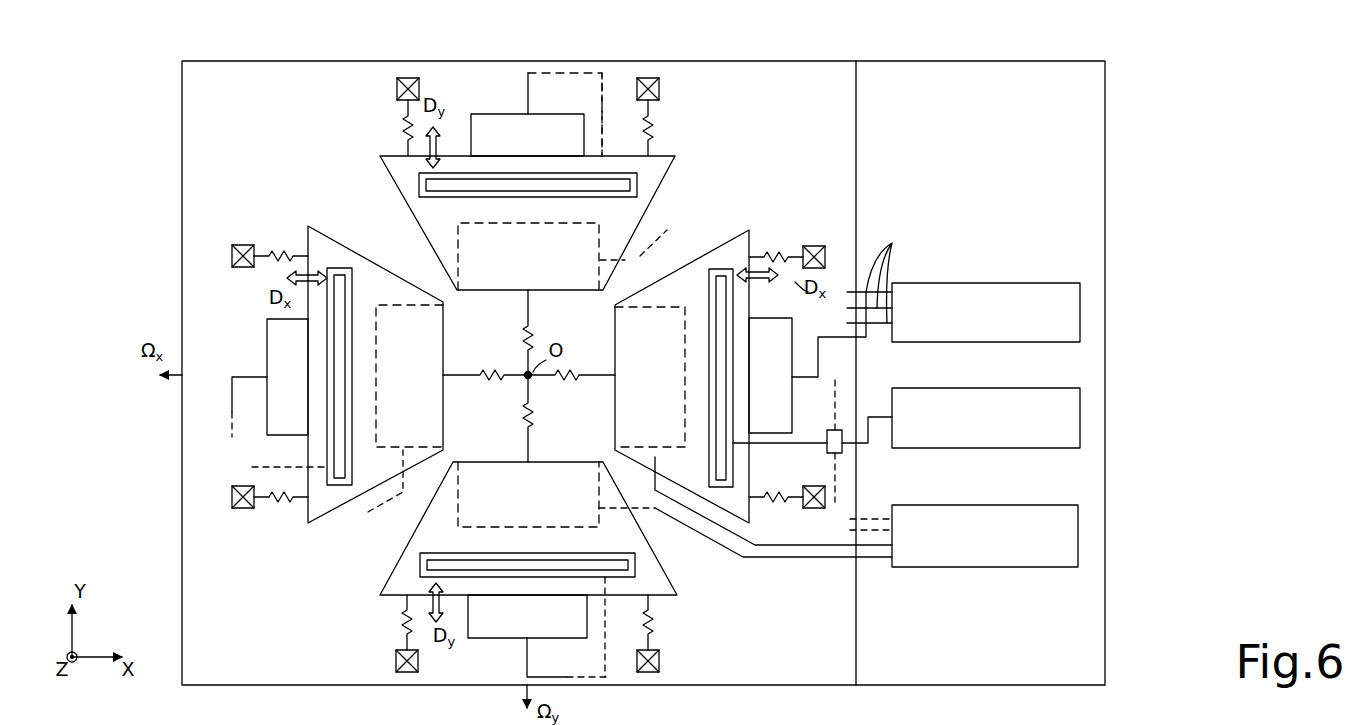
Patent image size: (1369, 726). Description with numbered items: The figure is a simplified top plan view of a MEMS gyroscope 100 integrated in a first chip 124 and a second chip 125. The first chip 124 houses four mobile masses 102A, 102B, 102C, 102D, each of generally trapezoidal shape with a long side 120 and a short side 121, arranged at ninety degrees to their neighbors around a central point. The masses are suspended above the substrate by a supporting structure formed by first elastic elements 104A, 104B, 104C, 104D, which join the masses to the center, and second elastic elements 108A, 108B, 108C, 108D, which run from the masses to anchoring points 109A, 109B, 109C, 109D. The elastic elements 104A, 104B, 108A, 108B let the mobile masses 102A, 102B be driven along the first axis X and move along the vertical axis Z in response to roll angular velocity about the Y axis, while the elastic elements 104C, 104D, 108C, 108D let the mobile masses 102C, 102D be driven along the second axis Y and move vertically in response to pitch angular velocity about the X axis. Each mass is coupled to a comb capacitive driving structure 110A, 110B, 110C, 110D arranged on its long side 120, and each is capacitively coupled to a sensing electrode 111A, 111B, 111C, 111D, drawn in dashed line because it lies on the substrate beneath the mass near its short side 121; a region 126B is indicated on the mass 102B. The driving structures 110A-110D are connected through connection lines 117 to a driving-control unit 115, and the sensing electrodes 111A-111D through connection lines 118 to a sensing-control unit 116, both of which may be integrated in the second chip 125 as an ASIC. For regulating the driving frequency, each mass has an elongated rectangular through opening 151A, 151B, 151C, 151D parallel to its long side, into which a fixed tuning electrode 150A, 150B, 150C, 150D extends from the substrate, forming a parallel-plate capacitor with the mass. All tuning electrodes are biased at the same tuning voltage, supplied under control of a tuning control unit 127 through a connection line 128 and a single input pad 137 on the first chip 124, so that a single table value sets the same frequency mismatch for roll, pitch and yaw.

The MEMS gyroscope 100 is at (128, 165).
The first chip 124 is at (190, 89).
The second chip 125 is at (1105, 165).
The mobile mass 102A is at (326, 236).
The mobile mass 102B is at (697, 262).
The mobile mass 102C is at (394, 182).
The mobile mass 102D is at (674, 590).
The first elastic element 104A is at (497, 384).
The first elastic element 104B is at (562, 384).
The first elastic element 104C is at (522, 342).
The first elastic element 104D is at (523, 420).
The second elastic element 108A is at (282, 255).
The second elastic element 108B is at (782, 252).
The second elastic element 108C is at (400, 118).
The second elastic element 108D is at (402, 625).
The anchor 109A is at (238, 244).
The anchor 109B is at (815, 245).
The anchor 109C is at (405, 78).
The anchor 109D is at (394, 662).
The driving structure 110A is at (267, 345).
The driving structure 110B is at (780, 324).
The driving structure 110C is at (483, 115).
The driving structure 110D is at (526, 638).
The sensing electrode 111A is at (409, 376).
The sensing electrode 111B is at (650, 377).
The sensing electrode 111C is at (528, 256).
The sensing electrode 111D is at (528, 494).
The driving-control unit 115 is at (958, 283).
The sensing-control unit 116 is at (1020, 506).
The connection line 117 is at (527, 96).
The connection line 118 is at (638, 260).
The long side 120 is at (381, 151).
The short side 121 is at (452, 306).
The sense electrode region 126B is at (615, 312).
The tuning control unit 127 is at (1010, 394).
The connection line 128 is at (603, 120).
The input pad 137 is at (840, 428).
The fixed tuning electrode 150A is at (340, 292).
The fixed tuning electrode 150B is at (720, 472).
The fixed tuning electrode 150C is at (451, 185).
The fixed tuning electrode 150D is at (432, 566).
The through opening 151A is at (356, 285).
The through opening 151B is at (740, 468).
The through opening 151C is at (590, 165).
The through opening 151D is at (416, 563).